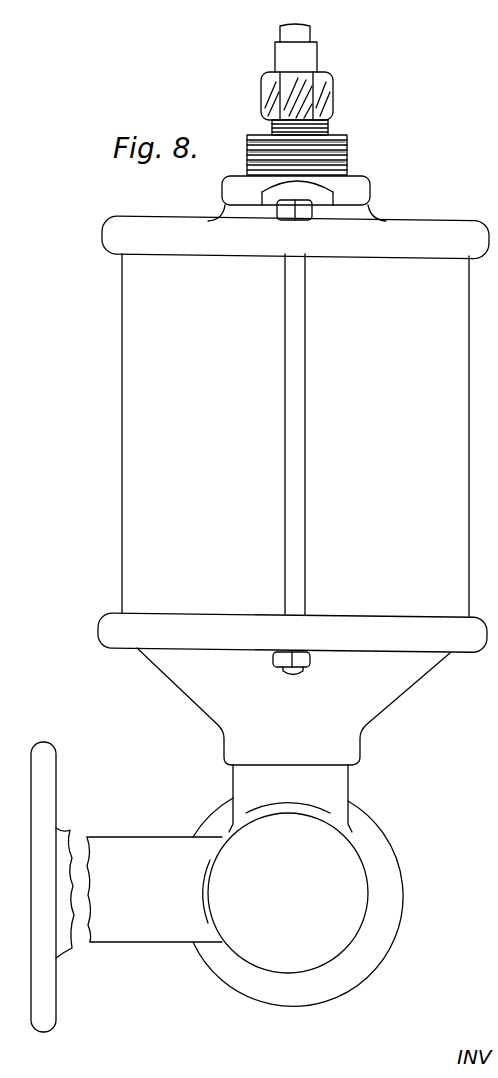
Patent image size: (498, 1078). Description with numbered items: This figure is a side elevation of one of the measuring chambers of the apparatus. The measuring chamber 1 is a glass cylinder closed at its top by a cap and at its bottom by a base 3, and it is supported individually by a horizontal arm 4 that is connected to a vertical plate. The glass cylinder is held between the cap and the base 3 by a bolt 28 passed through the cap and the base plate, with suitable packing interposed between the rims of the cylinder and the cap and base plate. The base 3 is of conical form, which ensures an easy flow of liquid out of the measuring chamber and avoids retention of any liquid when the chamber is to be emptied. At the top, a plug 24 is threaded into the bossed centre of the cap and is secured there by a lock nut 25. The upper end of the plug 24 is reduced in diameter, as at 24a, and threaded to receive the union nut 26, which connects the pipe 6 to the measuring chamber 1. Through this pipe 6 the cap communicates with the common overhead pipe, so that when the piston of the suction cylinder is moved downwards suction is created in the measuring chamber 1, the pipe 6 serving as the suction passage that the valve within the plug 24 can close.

The measuring chamber 1 is at (463, 404).
The base 3 is at (392, 693).
The horizontal arm 4 is at (148, 850).
The pipe 6 is at (304, 35).
The plug 24 is at (248, 156).
The reduced upper end of plug 24a is at (330, 131).
The lock nut 25 is at (370, 190).
The union nut 26 is at (330, 97).
The bolt 28 is at (302, 361).